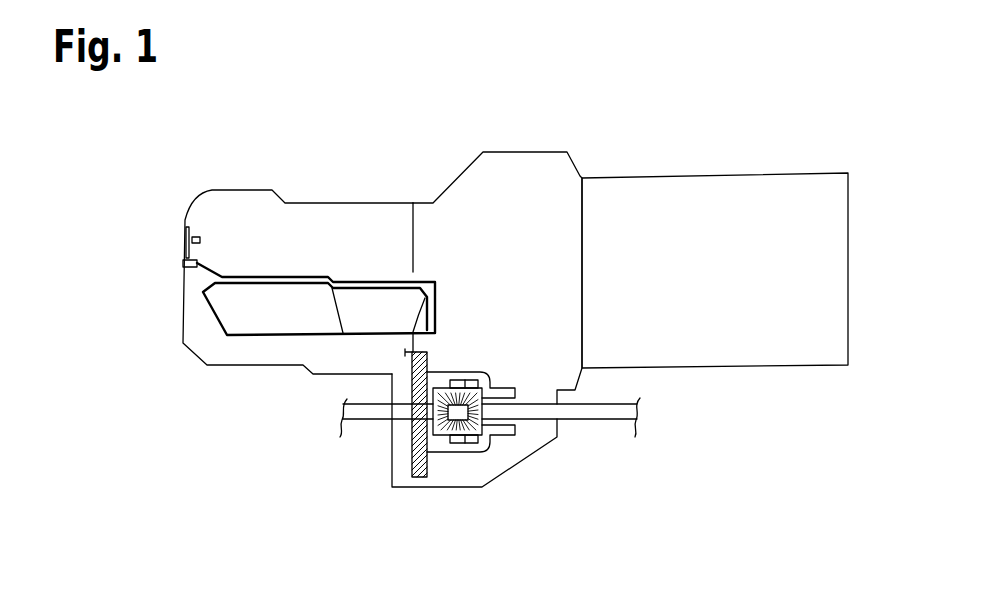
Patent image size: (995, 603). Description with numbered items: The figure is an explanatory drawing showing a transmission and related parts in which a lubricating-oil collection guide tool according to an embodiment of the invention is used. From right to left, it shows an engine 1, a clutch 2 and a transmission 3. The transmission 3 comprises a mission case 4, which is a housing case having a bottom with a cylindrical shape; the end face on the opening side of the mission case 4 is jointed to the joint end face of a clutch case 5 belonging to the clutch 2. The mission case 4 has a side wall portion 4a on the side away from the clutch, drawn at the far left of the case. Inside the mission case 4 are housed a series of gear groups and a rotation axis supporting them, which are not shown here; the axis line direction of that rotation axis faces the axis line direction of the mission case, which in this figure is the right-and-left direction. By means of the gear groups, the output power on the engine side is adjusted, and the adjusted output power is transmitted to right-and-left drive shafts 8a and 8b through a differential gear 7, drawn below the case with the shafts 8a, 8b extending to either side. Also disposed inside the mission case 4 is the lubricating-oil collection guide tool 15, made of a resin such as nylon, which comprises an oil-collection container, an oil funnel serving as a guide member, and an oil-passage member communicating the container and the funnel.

The engine 1 is at (728, 188).
The clutch 2 is at (487, 284).
The clutch case 5 is at (518, 165).
The transmission 3 is at (298, 244).
The mission case 4 is at (232, 202).
The side wall of case 4a is at (181, 308).
The lubricating-oil collection guide tool 15 is at (293, 270).
The differential gear 7 is at (473, 450).
The drive shaft 8a is at (367, 423).
The drive shaft 8b is at (603, 420).